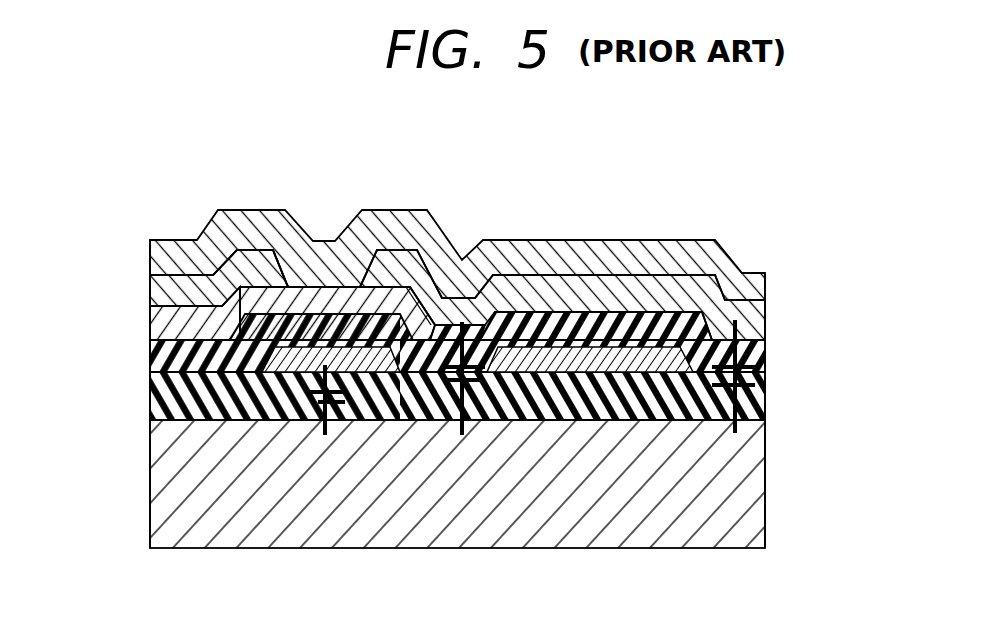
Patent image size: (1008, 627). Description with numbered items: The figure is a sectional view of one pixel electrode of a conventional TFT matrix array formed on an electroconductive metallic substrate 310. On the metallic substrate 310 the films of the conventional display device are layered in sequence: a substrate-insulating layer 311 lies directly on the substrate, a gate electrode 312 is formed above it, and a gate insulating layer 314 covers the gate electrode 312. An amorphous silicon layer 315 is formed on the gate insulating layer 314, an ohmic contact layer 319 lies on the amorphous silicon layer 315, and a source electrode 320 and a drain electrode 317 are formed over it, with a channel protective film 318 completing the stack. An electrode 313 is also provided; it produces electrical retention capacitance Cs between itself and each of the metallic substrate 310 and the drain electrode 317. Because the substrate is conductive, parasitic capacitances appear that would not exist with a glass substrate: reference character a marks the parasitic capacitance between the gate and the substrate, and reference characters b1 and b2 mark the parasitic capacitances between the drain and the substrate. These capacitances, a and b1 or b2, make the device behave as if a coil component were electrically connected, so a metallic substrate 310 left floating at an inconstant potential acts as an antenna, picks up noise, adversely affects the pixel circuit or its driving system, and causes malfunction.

The metallic substrate 310 is at (765, 488).
The substrate-insulating layer 311 is at (765, 398).
The gate electrode 312 is at (292, 372).
The electrode 313 is at (577, 363).
The gate insulating layer 314 is at (765, 348).
The amorphous silicon layer 315 is at (323, 300).
The drain electrode 317 is at (765, 320).
The channel protective film 318 is at (765, 287).
The ohmic contact layer 319 is at (163, 311).
The source electrode 320 is at (253, 262).
The parasitic capacitance C g-Sub a is at (325, 435).
The parasitic capacitance C d-Sub b1 is at (462, 432).
The parasitic capacitance C d-Sub b2 is at (735, 433).